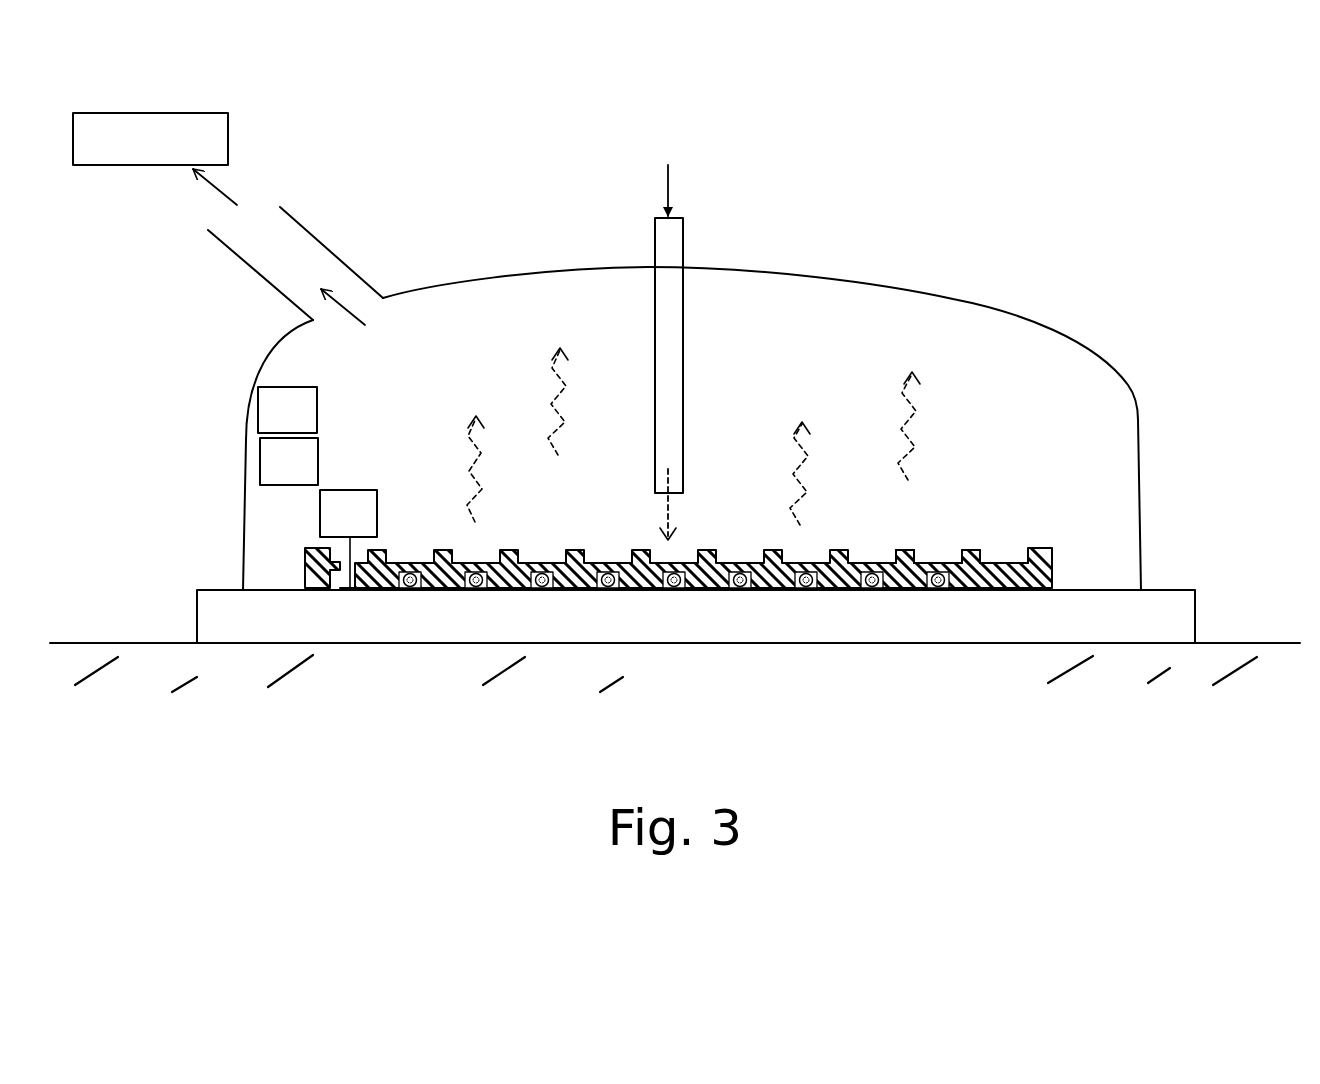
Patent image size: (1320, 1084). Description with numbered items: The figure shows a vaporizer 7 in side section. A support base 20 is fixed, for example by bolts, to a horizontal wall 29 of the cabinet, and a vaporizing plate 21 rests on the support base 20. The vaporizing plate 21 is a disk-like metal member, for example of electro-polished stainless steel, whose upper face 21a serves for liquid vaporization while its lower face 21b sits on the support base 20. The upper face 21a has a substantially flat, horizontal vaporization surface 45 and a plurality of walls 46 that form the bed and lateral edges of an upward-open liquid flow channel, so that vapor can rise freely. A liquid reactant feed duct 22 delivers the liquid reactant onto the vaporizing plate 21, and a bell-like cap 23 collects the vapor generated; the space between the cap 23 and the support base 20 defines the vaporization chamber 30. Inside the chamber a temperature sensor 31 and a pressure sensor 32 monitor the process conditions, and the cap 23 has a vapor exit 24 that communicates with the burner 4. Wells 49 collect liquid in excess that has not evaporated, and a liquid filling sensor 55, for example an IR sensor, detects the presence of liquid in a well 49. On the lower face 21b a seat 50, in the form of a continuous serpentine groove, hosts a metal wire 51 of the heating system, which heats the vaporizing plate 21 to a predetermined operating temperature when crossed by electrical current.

The burner 4 is at (184, 118).
The vaporizer 7 is at (994, 228).
The support base 20 is at (635, 635).
The vaporizing plate 21 is at (617, 590).
The upper face 21a is at (604, 562).
The lower face 21b is at (520, 598).
The liquid reactant feed duct 22 is at (681, 396).
The bell-like cap 23 is at (774, 271).
The vapor exit 24 is at (324, 267).
The horizontal wall 29 is at (122, 640).
The vaporization chamber 30 is at (693, 420).
The temperature sensor 31 is at (262, 408).
The pressure sensor 32 is at (262, 463).
The vaporization surface 45 is at (998, 551).
The walls 46 is at (905, 545).
The wells 49 is at (352, 586).
The seat 50 is at (886, 600).
The metal wire 51 is at (868, 591).
The liquid filling sensor 55 is at (356, 497).